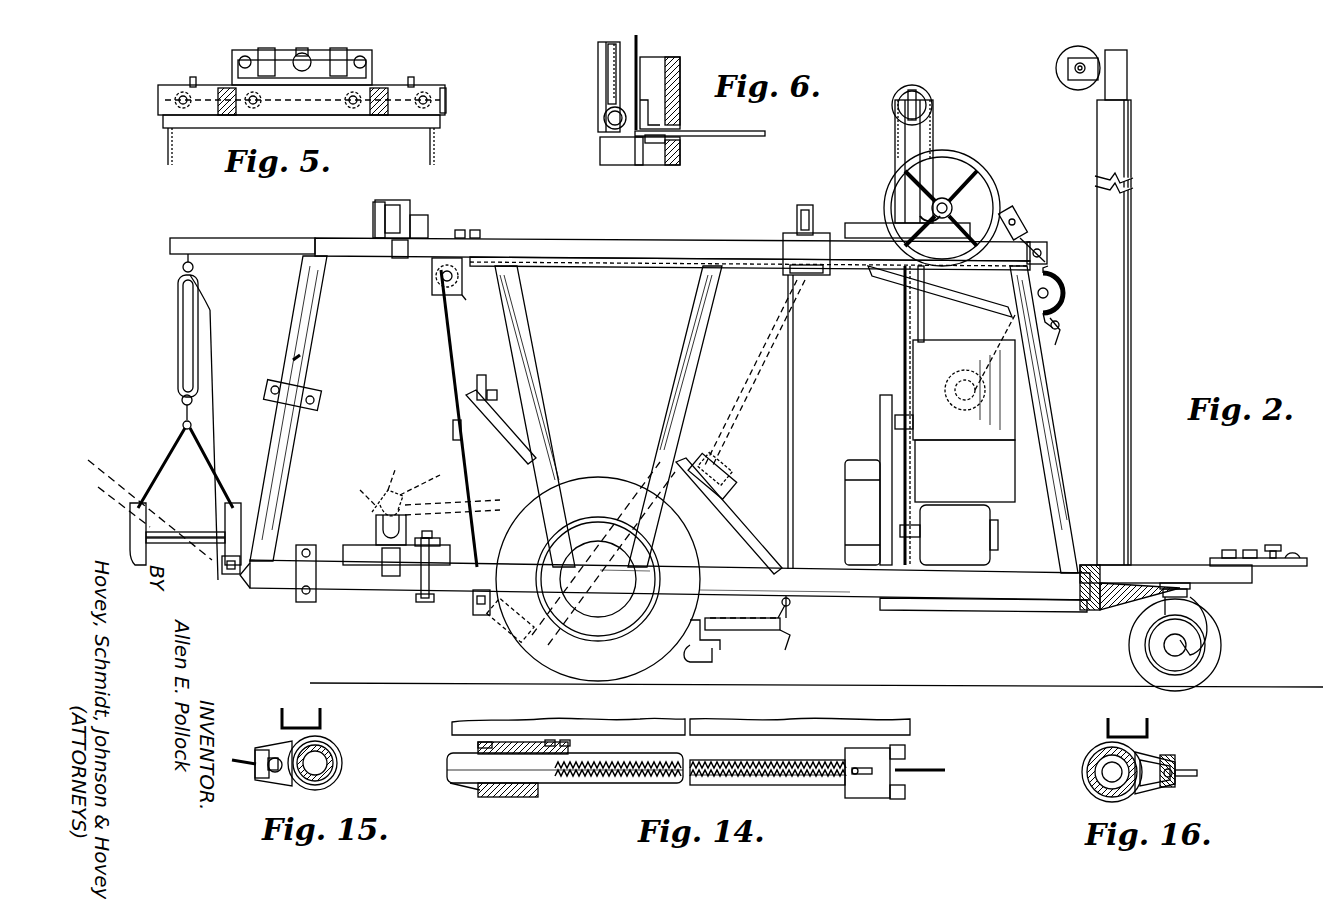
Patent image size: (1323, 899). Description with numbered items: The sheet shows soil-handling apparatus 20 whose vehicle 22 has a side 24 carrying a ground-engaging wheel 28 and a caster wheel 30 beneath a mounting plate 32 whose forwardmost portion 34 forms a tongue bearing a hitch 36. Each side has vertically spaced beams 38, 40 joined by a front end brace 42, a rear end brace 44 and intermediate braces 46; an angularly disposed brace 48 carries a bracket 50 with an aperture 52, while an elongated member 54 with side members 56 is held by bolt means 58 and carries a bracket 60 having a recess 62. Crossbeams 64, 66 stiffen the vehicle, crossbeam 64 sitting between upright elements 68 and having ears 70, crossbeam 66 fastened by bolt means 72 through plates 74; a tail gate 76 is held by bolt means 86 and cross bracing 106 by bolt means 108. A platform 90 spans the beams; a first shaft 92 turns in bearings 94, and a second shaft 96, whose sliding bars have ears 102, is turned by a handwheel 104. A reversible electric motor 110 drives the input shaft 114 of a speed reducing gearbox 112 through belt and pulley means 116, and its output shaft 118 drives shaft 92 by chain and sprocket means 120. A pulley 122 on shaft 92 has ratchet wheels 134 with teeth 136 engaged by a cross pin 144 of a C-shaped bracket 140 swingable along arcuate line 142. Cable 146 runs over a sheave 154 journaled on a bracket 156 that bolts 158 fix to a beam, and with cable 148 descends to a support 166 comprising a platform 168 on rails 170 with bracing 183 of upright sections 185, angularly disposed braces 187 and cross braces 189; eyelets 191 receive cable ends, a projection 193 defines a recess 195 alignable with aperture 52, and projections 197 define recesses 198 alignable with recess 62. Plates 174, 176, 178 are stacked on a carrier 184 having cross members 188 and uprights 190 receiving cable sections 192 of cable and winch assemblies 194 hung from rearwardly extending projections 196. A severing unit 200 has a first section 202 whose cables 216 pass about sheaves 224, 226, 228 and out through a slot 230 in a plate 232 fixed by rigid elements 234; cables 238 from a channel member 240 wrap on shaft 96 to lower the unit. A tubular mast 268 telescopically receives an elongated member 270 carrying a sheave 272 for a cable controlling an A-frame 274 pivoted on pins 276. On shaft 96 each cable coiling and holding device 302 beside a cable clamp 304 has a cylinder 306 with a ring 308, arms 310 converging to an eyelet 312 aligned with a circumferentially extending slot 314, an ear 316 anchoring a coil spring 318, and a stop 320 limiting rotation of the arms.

In FIG. 2, the soil-handling apparatus 20 is at (982, 152).
In FIG. 2, the vehicle 22 is at (1052, 414).
In FIG. 2, the side 24 is at (668, 242).
In FIG. 2, the ground-engaging wheel 28 is at (640, 655).
In FIG. 2, the caster wheel 30 is at (1221, 640).
In FIG. 2, the mounting plate 32 is at (1088, 612).
In FIG. 2, the forwardmost portion 34 is at (1185, 565).
In FIG. 2, the hitch 36 is at (1288, 556).
In FIG. 2, the beam 38 is at (868, 597).
In FIG. 2, the beam 40 is at (570, 258).
In FIG. 2, the front end brace 42 is at (1045, 450).
In FIG. 2, the rear end brace 44 is at (300, 330).
In FIG. 2, the intermediate braces 46 is at (520, 318).
In FIG. 2, the angularly disposed brace 48 is at (735, 525).
In FIG. 2, the bracket 50 is at (725, 490).
In FIG. 2, the aperture 52 is at (730, 468).
In FIG. 2, the elongated member 54 is at (355, 545).
In FIG. 2, the side members 56 is at (392, 580).
In FIG. 2, the bolt means 58 is at (424, 582).
In FIG. 2, the bracket 60 is at (418, 534).
In FIG. 2, the recess 62 is at (385, 495).
In FIG. 2, the crossbeam 64 is at (410, 205).
In FIG. 2, the crossbeam 66 is at (797, 208).
In FIG. 2, the upright elements 68 is at (373, 218).
In FIG. 2, the ears 70 is at (393, 258).
In FIG. 2, the bolt means 72 is at (783, 242).
In FIG. 2, the plates 74 is at (850, 223).
In FIG. 2, the tail gate 76 is at (295, 345).
In FIG. 2, the bolt means 86 is at (318, 395).
In FIG. 2, the platform 90 is at (1030, 573).
In FIG. 2, the first shaft 92 is at (1038, 293).
In FIG. 2, the bearings 94 is at (1010, 316).
In FIG. 2, the second shaft 96 is at (920, 210).
In FIG. 15, the second shaft 96 is at (340, 780).
In FIG. 14, the second shaft 96 is at (765, 783).
In FIG. 16, the second shaft 96 is at (1095, 765).
In FIG. 2, the ears 102 is at (890, 278).
In FIG. 2, the handwheel 104 is at (958, 195).
In FIG. 2, the cross bracing 106 is at (337, 552).
In FIG. 2, the bolt means 108 is at (306, 604).
In FIG. 2, the reversible electric motor 110 is at (949, 535).
In FIG. 2, the speed reducing gearbox 112 is at (972, 445).
In FIG. 2, the input shaft 114 is at (913, 425).
In FIG. 2, the belt and pulley means 116 is at (877, 434).
In FIG. 2, the output shaft 118 is at (964, 390).
In FIG. 2, the chain and sprocket means 120 is at (1055, 342).
In FIG. 2, the pulley 122 is at (924, 318).
In FIG. 2, the ratchet wheels 134 is at (1070, 298).
In FIG. 2, the teeth 136 is at (1074, 331).
In FIG. 2, the C-shaped bracket 140 is at (1030, 224).
In FIG. 2, the arcuate line 142 is at (1064, 244).
In FIG. 2, the cross pin 144 is at (1013, 205).
In FIG. 2, the cable 146 is at (462, 345).
In FIG. 2, the cable 148 is at (794, 417).
In FIG. 2, the sheave 154 is at (432, 280).
In FIG. 2, the bracket 156 is at (473, 310).
In FIG. 2, the bolts 158 is at (478, 232).
In FIG. 2, the support 166 is at (742, 427).
In FIG. 2, the platform 168 is at (720, 618).
In FIG. 2, the rails 170 is at (790, 640).
In FIG. 2, the plate 174 is at (158, 532).
In FIG. 2, the plate 176 is at (188, 538).
In FIG. 2, the plate 178 is at (131, 545).
In FIG. 2, the bracing 183 is at (470, 460).
In FIG. 2, the carrier 184 is at (130, 510).
In FIG. 2, the upright sections 185 is at (477, 380).
In FIG. 2, the angularly disposed brace 187 is at (540, 435).
In FIG. 2, the cross members 188 is at (185, 557).
In FIG. 2, the cross braces 189 is at (462, 625).
In FIG. 2, the uprights 190 is at (240, 505).
In FIG. 2, the eyelets 191 is at (790, 620).
In FIG. 2, the cable sections 192 is at (188, 480).
In FIG. 2, the projection 193 is at (731, 644).
In FIG. 2, the cable and winch assembly 194 is at (178, 355).
In FIG. 2, the recess 195 is at (711, 663).
In FIG. 2, the rearwardly extending projection 196 is at (190, 234).
In FIG. 2, the projections 197 is at (453, 435).
In FIG. 2, the recesses 198 is at (508, 440).
In FIG. 5, the severing unit 200 is at (372, 72).
In FIG. 6, the severing unit 200 is at (600, 58).
In FIG. 2, the severing unit 200 is at (938, 106).
In FIG. 5, the first section 202 is at (350, 58).
In FIG. 6, the first section 202 is at (610, 78).
In FIG. 5, the cables 216 is at (168, 145).
In FIG. 6, the cables 216 is at (604, 112).
In FIG. 2, the cables 216 is at (933, 125).
In FIG. 5, the sheave 224 is at (340, 48).
In FIG. 6, the sheave 224 is at (612, 138).
In FIG. 5, the sheave 226 is at (303, 101).
In FIG. 6, the sheave 226 is at (668, 160).
In FIG. 5, the sheave 228 is at (165, 100).
In FIG. 6, the slot 230 is at (670, 138).
In FIG. 5, the plate 232 is at (396, 125).
In FIG. 6, the plate 232 is at (680, 60).
In FIG. 6, the rigid elements 234 is at (636, 150).
In FIG. 6, the cables 238 is at (640, 38).
In FIG. 2, the cables 238 is at (903, 345).
In FIG. 14, the cables 238 is at (478, 787).
In FIG. 16, the cables 238 is at (1197, 770).
In FIG. 5, the channel member 240 is at (440, 88).
In FIG. 6, the channel member 240 is at (660, 110).
In FIG. 2, the tubular mast 268 is at (1133, 352).
In FIG. 2, the elongated member 270 is at (1128, 73).
In FIG. 2, the sheave 272 is at (1063, 80).
In FIG. 2, the A-frame 274 is at (115, 462).
In FIG. 2, the pins 276 is at (252, 588).
In FIG. 15, the cable coiling and holding device 302 is at (358, 742).
In FIG. 14, the cable coiling and holding device 302 is at (514, 734).
In FIG. 16, the cable coiling and holding device 302 is at (1094, 737).
In FIG. 15, the cable clamp 304 is at (325, 740).
In FIG. 14, the cable clamp 304 is at (572, 742).
In FIG. 15, the cylinder 306 is at (335, 760).
In FIG. 14, the cylinder 306 is at (512, 792).
In FIG. 16, the cylinder 306 is at (1090, 782).
In FIG. 14, the ring 308 is at (478, 745).
In FIG. 15, the arms 310 is at (260, 748).
In FIG. 14, the arms 310 is at (905, 750).
In FIG. 16, the arms 310 is at (1128, 738).
In FIG. 15, the eyelet 312 is at (270, 758).
In FIG. 16, the eyelet 312 is at (1175, 780).
In FIG. 16, the circumferentially extending slot 314 is at (1150, 760).
In FIG. 15, the ear 316 is at (272, 772).
In FIG. 14, the ear 316 is at (860, 777).
In FIG. 15, the coil spring 318 is at (240, 775).
In FIG. 14, the coil spring 318 is at (790, 754).
In FIG. 15, the stop 320 is at (320, 715).
In FIG. 14, the stop 320 is at (912, 727).
In FIG. 16, the stop 320 is at (1147, 732).